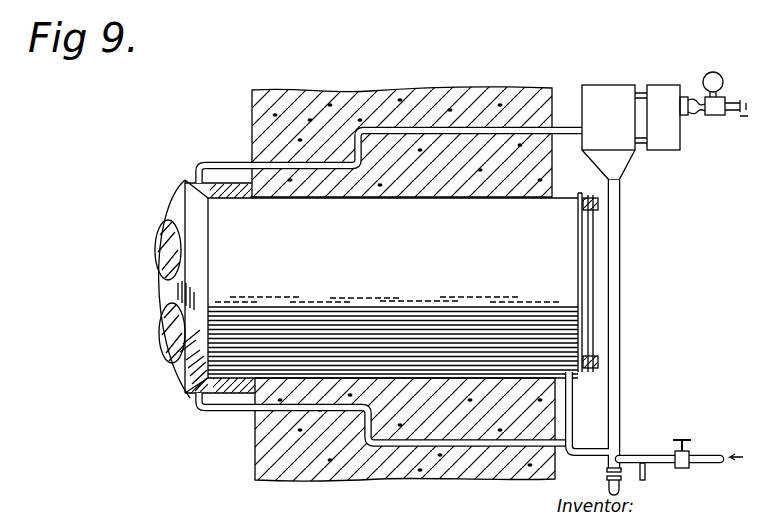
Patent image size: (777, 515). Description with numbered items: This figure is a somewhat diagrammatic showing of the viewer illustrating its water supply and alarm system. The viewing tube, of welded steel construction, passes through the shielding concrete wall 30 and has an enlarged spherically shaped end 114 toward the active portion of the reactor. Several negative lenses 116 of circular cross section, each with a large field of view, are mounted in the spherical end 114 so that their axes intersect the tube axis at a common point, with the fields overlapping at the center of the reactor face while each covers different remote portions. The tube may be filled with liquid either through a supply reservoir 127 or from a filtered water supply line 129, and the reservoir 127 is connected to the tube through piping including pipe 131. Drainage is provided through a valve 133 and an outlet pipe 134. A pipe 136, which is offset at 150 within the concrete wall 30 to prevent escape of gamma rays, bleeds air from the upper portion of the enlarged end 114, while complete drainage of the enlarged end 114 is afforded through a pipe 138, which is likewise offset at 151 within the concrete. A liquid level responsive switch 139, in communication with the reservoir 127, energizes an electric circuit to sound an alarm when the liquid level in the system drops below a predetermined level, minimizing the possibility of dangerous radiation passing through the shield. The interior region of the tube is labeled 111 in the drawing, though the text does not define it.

The concrete wall 30 is at (343, 92).
The tank body 111 is at (396, 263).
The enlarged spherically shaped end 114 is at (163, 292).
The negative lenses 116 is at (168, 254).
The pipe 136 is at (456, 127).
The offset 150 is at (374, 150).
The supply reservoir 127 is at (622, 128).
The liquid level responsive switch 139 is at (664, 150).
The valve 133 is at (608, 479).
The pipe 138 is at (372, 448).
The offset 151 is at (355, 430).
The pipe 131 is at (576, 446).
The filtered water supply line 129 is at (700, 452).
The outlet pipe 134 is at (643, 489).